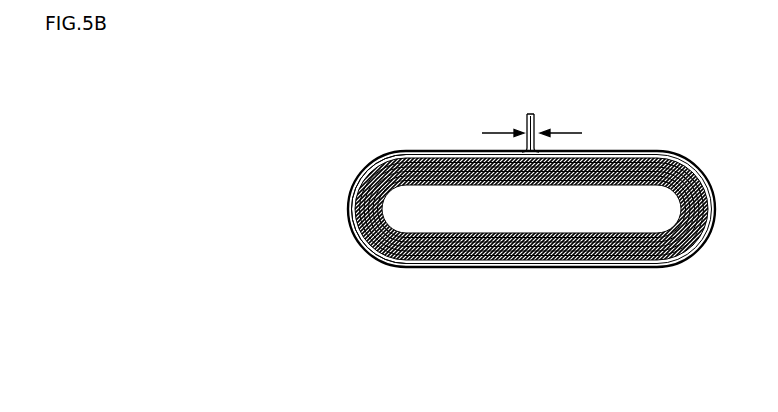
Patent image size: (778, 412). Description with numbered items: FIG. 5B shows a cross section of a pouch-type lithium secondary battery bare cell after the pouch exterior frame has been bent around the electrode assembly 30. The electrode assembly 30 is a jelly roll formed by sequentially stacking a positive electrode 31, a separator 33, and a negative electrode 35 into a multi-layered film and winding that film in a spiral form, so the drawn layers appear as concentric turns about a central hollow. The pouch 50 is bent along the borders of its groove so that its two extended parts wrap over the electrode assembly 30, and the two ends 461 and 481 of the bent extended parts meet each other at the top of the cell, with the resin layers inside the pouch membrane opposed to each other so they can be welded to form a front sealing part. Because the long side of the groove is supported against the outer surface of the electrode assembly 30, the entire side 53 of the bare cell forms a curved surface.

The electrode assembly 30 is at (627, 333).
The positive electrode 31 is at (549, 268).
The separator 33 is at (586, 268).
The negative electrode 35 is at (623, 268).
The pouch 50 is at (365, 160).
The entire side of the pouch-type bare cell 53 is at (348, 207).
The end of extended part 461 is at (527, 114).
The end of extended part 481 is at (535, 114).